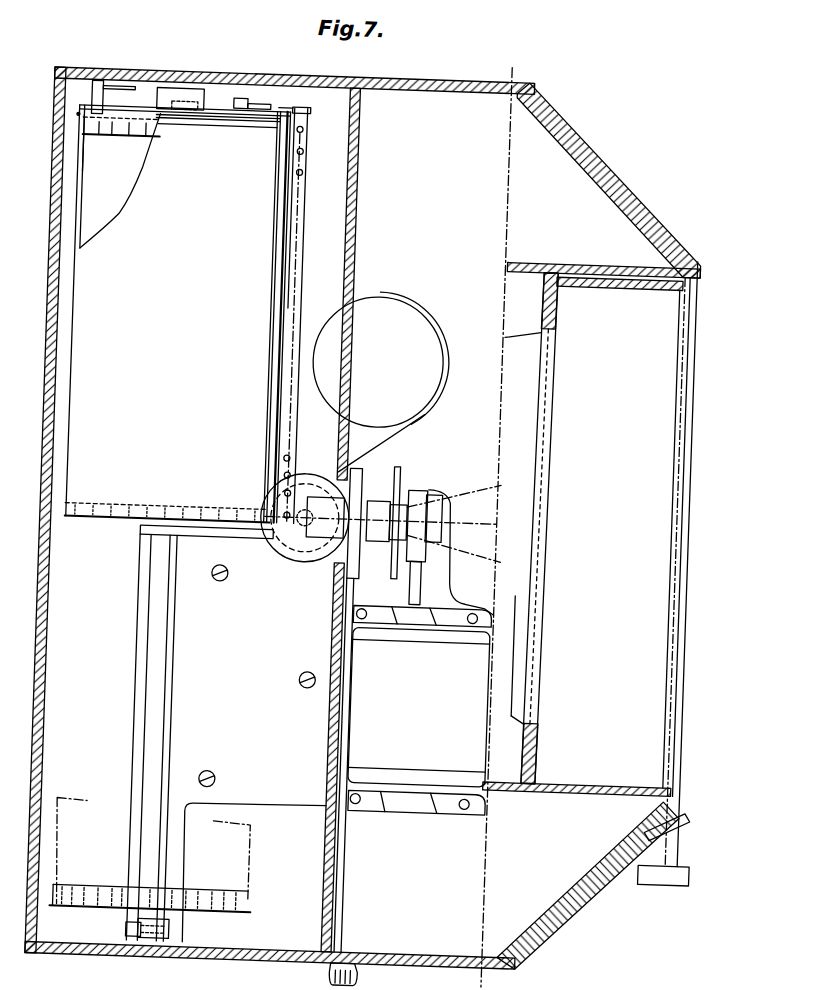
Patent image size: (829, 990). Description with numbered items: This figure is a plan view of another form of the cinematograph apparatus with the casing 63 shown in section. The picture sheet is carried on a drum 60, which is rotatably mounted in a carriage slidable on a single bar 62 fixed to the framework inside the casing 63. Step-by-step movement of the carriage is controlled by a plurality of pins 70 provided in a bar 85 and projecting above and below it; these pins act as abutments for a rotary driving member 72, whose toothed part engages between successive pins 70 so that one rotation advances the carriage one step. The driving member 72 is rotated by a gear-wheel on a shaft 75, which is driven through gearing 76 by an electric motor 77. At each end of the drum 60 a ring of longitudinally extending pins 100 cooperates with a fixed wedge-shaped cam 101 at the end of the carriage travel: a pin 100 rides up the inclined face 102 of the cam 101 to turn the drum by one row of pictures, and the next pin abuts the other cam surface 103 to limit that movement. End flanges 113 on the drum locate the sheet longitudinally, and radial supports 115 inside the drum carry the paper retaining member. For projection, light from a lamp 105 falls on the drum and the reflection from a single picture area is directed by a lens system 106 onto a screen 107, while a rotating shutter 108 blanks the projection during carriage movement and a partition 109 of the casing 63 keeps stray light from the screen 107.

The drum 60 is at (242, 256).
The bar 62 is at (191, 684).
The casing 63 is at (373, 964).
The pins 70 is at (307, 165).
The rotary driving member 72 is at (335, 551).
The shaft 75 is at (379, 562).
The gearing 76 is at (448, 522).
The electric motor 77 is at (377, 715).
The bar 85 is at (310, 102).
The pins 100 is at (132, 134).
The wedge-shaped cam 101 is at (104, 85).
The inclined face 102 is at (199, 926).
The cam surface 103 is at (111, 891).
The lamp 105 is at (368, 295).
The lens system 106 is at (388, 504).
The screen 107 is at (545, 489).
The rotating shutter 108 is at (414, 470).
The partition 109 is at (440, 394).
The end flanges 113 is at (80, 113).
The radial supports 115 is at (277, 208).